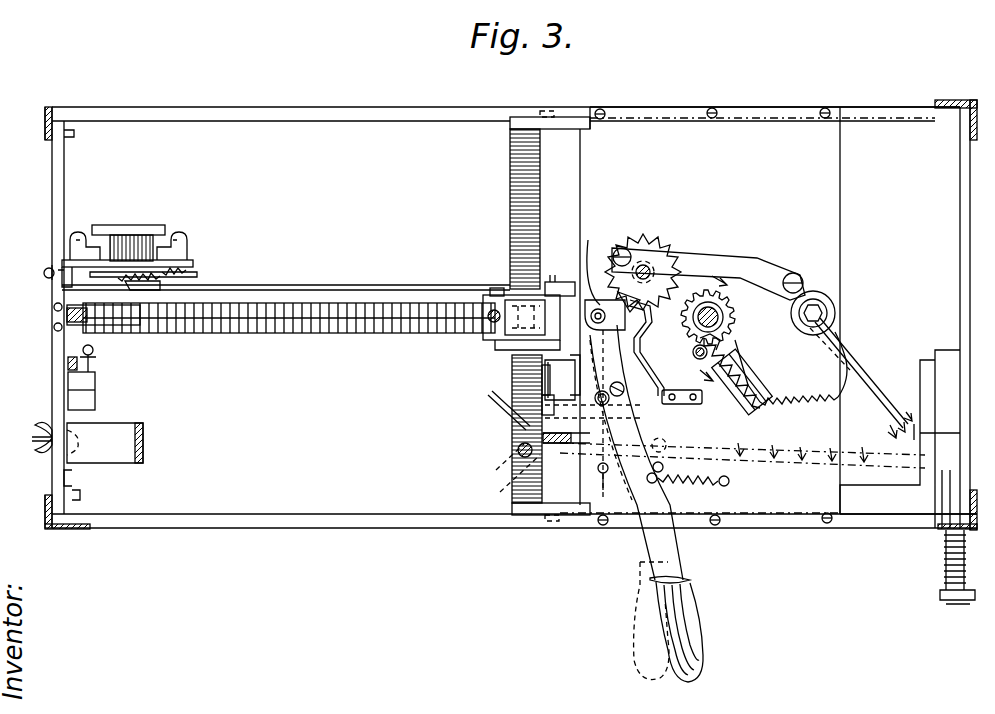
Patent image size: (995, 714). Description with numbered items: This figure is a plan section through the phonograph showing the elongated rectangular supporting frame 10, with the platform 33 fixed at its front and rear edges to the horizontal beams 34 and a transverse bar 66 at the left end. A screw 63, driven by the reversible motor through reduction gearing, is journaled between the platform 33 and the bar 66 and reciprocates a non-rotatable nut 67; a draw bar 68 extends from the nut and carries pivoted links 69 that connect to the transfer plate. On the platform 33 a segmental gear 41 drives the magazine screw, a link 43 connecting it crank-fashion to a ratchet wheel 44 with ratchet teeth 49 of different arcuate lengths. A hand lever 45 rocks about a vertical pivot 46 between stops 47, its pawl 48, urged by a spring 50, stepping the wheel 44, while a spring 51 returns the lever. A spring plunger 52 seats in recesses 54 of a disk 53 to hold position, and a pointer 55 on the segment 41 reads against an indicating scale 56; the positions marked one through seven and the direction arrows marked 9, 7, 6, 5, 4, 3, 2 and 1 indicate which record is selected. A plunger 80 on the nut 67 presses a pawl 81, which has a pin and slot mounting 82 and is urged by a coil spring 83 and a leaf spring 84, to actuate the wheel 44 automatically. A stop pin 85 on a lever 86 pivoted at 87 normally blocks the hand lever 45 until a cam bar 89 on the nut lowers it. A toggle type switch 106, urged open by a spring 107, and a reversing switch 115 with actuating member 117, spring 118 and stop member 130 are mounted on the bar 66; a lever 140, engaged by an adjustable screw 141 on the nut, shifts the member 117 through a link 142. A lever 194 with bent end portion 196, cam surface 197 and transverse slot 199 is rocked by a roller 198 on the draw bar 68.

The supporting frame 10 is at (412, 104).
The horizontal beams 34 is at (866, 108).
The platform 33 is at (828, 222).
The links 69 is at (582, 116).
The draw bar 68 is at (516, 226).
The stop pin 85 is at (585, 455).
The link 142 is at (400, 286).
The adjustable screw 141 is at (498, 288).
The lever 140 is at (555, 282).
The screw 63 is at (300, 334).
The nut 67 is at (486, 344).
The stop member 130 is at (130, 310).
The reversing switch 115 is at (140, 226).
The spring 118 is at (188, 270).
The actuating member 117 is at (170, 284).
The transverse bar 66 is at (64, 362).
The spring 107 is at (94, 360).
The toggle type switch 106 is at (96, 386).
The bent end portion 196 is at (497, 408).
The cam surface 197 is at (490, 448).
The roller 198 is at (504, 480).
The transverse slot 199 is at (512, 456).
The lever 194 is at (556, 444).
The plunger 80 is at (500, 350).
The pivot 87 is at (543, 370).
The cam bar 89 is at (543, 385).
The coil spring 83 is at (580, 385).
The lever 86 is at (595, 405).
The pawl 48 is at (599, 263).
The ratchet wheel 44 is at (660, 248).
The ratchet teeth 49 is at (626, 248).
The link 43 is at (712, 260).
The disk 53 is at (736, 310).
The recesses 54 is at (735, 325).
The segmental gear 41 is at (836, 334).
The pointer 55 is at (859, 375).
The direction arrow 9 is at (703, 323).
The pawl 81 is at (648, 330).
The leaf spring 84 is at (693, 352).
The spring 50 is at (671, 397).
The vertical pivot 46 is at (624, 392).
The spring plunger 52 is at (750, 402).
The pin and slot mounting 82 is at (634, 440).
The hand lever 45 is at (696, 616).
The stops 47 is at (664, 467).
The spring 51 is at (700, 486).
The indicating scale 56 is at (880, 441).
The position mark 7 is at (736, 457).
The position mark 6 is at (772, 458).
The position mark 5 is at (800, 460).
The position mark 4 is at (830, 461).
The position mark 3 is at (863, 457).
The position mark 2 is at (894, 440).
The position mark 1 is at (911, 426).